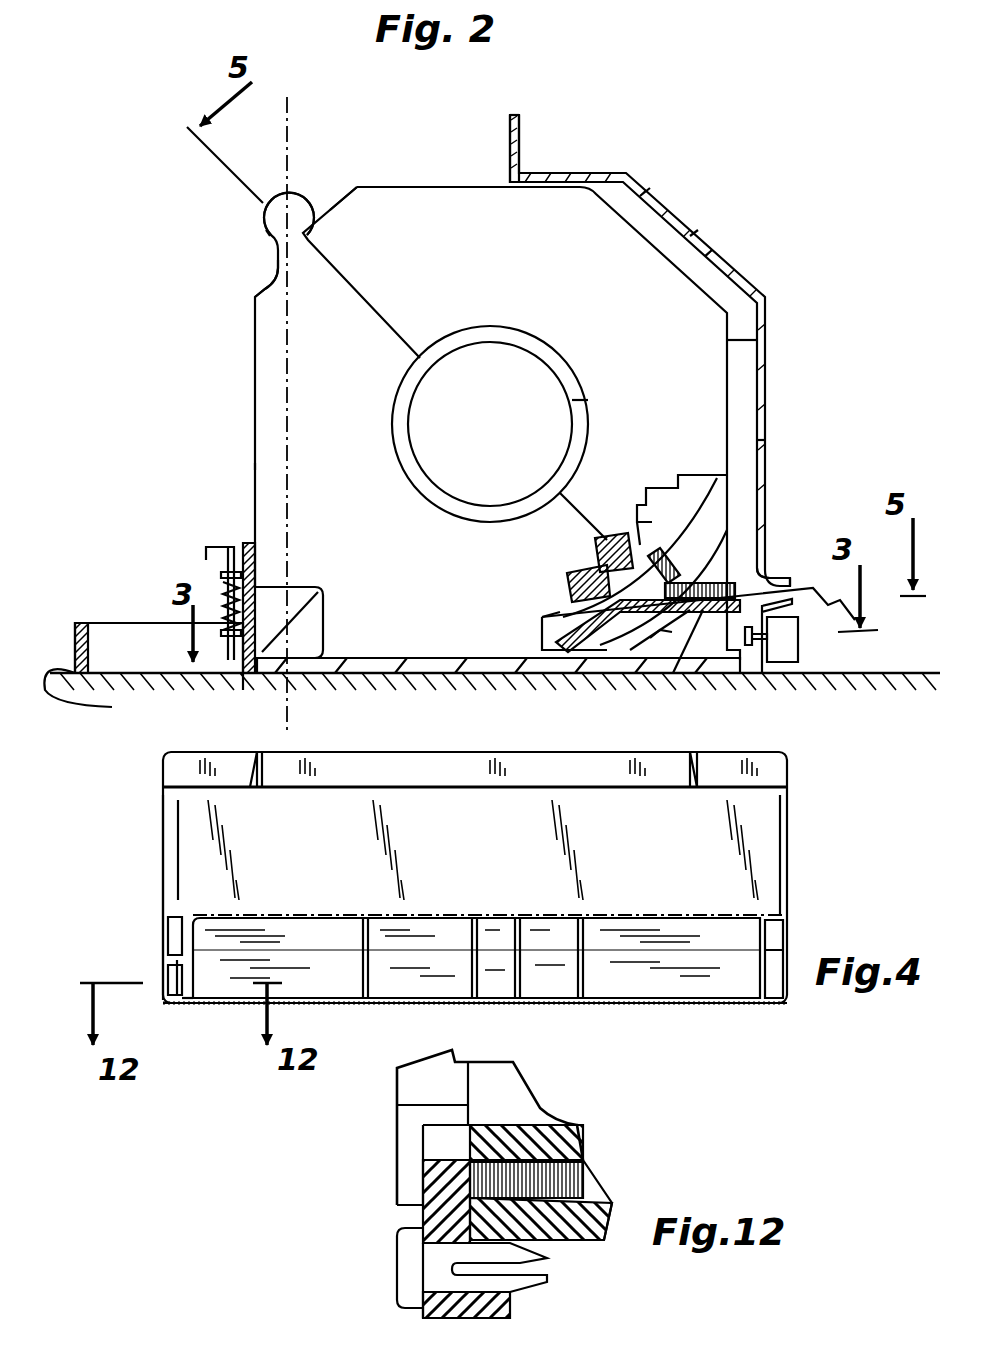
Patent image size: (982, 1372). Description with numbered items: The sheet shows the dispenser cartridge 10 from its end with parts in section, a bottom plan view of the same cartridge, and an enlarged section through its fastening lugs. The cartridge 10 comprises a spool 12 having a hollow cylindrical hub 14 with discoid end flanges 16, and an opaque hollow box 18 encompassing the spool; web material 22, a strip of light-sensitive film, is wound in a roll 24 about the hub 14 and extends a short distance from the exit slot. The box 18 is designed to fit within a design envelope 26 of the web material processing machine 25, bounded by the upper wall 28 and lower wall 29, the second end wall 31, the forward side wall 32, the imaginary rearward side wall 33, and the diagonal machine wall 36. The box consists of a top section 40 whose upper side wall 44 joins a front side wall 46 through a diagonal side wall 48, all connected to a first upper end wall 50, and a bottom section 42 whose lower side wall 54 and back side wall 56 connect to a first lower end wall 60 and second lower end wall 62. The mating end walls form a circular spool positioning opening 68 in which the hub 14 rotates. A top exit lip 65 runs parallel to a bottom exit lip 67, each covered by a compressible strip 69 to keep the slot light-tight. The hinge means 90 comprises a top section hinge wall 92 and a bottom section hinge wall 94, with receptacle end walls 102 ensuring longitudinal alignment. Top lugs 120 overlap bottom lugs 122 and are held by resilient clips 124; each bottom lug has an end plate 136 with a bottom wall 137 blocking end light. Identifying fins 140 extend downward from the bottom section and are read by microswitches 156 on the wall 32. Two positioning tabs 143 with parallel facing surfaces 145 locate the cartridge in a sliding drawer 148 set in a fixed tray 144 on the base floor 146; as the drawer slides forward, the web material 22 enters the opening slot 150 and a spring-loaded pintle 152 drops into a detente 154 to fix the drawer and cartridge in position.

In FIG. 2, the dispenser cartridge 10 is at (226, 300).
In FIG. 4, the dispenser cartridge 10 is at (830, 832).
In FIG. 2, the spool 12 is at (520, 340).
In FIG. 2, the hollow cylindrical hub 14 is at (565, 378).
In FIG. 2, the discoid end flanges 16 is at (622, 540).
In FIG. 2, the hollow box 18 is at (255, 413).
In FIG. 4, the hollow box 18 is at (770, 815).
In FIG. 2, the web material 22 is at (855, 628).
In FIG. 2, the roll 24 is at (580, 578).
In FIG. 2, the web material processing machine 25 is at (690, 230).
In FIG. 2, the design envelope 26 is at (735, 270).
In FIG. 2, the upper wall 28 is at (548, 175).
In FIG. 2, the lower wall 29 is at (412, 673).
In FIG. 2, the second end wall 31 is at (150, 622).
In FIG. 2, the forward side wall 32 is at (765, 447).
In FIG. 2, the imaginary rearward side wall 33 is at (287, 150).
In FIG. 2, the diagonal machine wall 36 is at (706, 256).
In FIG. 2, the top section 40 is at (508, 227).
In FIG. 2, the bottom section 42 is at (338, 377).
In FIG. 4, the bottom section 42 is at (178, 832).
In FIG. 2, the upper side wall 44 is at (450, 185).
In FIG. 2, the front side wall 46 is at (765, 340).
In FIG. 2, the diagonal side wall 48 is at (640, 196).
In FIG. 2, the first upper end wall 50 is at (411, 260).
In FIG. 4, the lower side wall 54 is at (178, 808).
In FIG. 2, the back side wall 56 is at (255, 463).
In FIG. 2, the first lower end wall 60 is at (338, 437).
In FIG. 4, the second lower end wall 62 is at (163, 862).
In FIG. 12, the second lower end wall 62 is at (412, 1085).
In FIG. 2, the top exit lip 65 is at (705, 585).
In FIG. 2, the bottom exit lip 67 is at (673, 673).
In FIG. 2, the circular spool positioning opening 68 is at (586, 408).
In FIG. 2, the compressible strip 69 is at (630, 650).
In FIG. 12, the compressible strip 69 is at (590, 1190).
In FIG. 2, the hinge means 90 is at (262, 222).
In FIG. 2, the top section hinge wall 92 is at (340, 200).
In FIG. 2, the bottom section hinge wall 94 is at (276, 275).
In FIG. 2, the end walls 102 is at (266, 232).
In FIG. 4, the top lugs 120 is at (175, 1003).
In FIG. 12, the top lugs 120 is at (448, 1318).
In FIG. 4, the bottom lugs 122 is at (190, 1002).
In FIG. 12, the bottom lugs 122 is at (490, 1318).
In FIG. 4, the resilient clips 124 is at (165, 985).
In FIG. 12, the resilient clips 124 is at (555, 1278).
In FIG. 12, the end plate 136 is at (420, 1153).
In FIG. 4, the bottom wall 137 is at (165, 945).
In FIG. 12, the bottom wall 137 is at (415, 1112).
In FIG. 2, the identifying fins 140 is at (740, 662).
In FIG. 4, the identifying fins 140 is at (490, 1000).
In FIG. 2, the cartridge box positioning tabs 143 is at (323, 614).
In FIG. 4, the cartridge box positioning tabs 143 is at (262, 790).
In FIG. 2, the fixed tray 144 is at (115, 632).
In FIG. 2, the facing surfaces 145 is at (712, 660).
In FIG. 4, the facing surfaces 145 is at (262, 760).
In FIG. 2, the processing machine base floor 146 is at (106, 697).
In FIG. 2, the sliding drawer 148 is at (247, 545).
In FIG. 2, the opening slot 150 is at (790, 575).
In FIG. 2, the spring-loaded pintle 152 is at (225, 548).
In FIG. 2, the detente 154 is at (242, 690).
In FIG. 2, the microswitches 156 is at (785, 645).